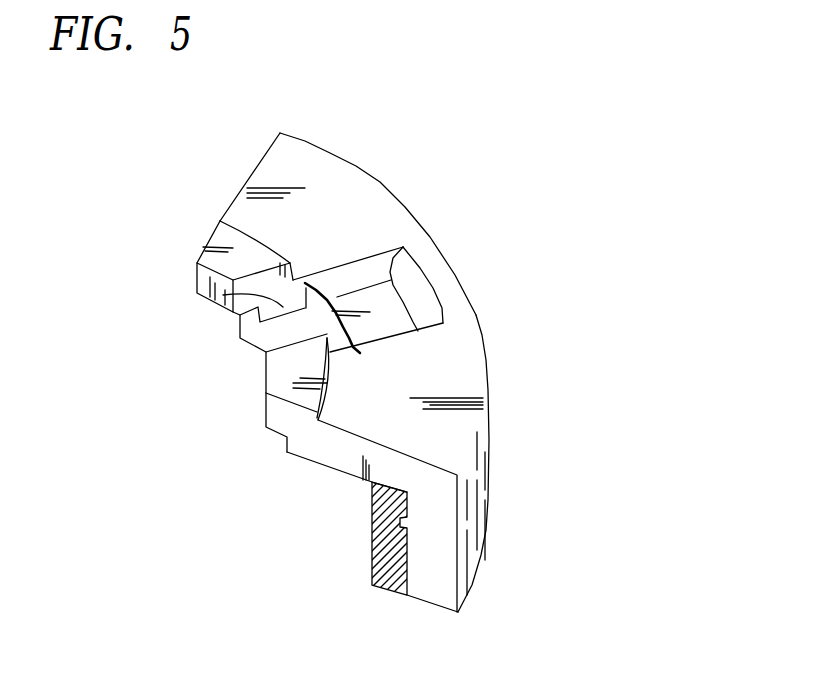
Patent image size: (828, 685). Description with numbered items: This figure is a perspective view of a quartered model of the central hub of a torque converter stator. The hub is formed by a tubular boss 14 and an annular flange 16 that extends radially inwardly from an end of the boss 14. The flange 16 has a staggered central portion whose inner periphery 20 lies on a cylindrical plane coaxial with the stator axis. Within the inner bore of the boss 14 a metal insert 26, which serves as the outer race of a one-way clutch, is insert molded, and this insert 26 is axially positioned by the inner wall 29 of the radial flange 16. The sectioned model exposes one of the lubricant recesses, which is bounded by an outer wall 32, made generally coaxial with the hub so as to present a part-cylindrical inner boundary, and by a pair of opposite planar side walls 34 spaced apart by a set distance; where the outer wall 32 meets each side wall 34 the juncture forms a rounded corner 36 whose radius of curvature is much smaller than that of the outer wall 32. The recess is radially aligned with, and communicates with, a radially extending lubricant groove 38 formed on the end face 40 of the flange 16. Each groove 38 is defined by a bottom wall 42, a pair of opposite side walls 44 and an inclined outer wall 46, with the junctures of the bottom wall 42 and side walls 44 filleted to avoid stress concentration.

The tubular boss 14 is at (435, 577).
The annular flange 16 is at (325, 448).
The inner periphery 20 is at (196, 262).
The metal insert 26 is at (383, 565).
The inner wall 29 is at (347, 478).
The outer wall 32 is at (327, 343).
The side walls 34 is at (223, 295).
The rounded corner 36 is at (258, 322).
The lubricant groove 38 is at (387, 305).
The end face 40 is at (287, 160).
The bottom wall 42 is at (383, 323).
The side walls 44 is at (367, 273).
The inclined outer wall 46 is at (430, 312).